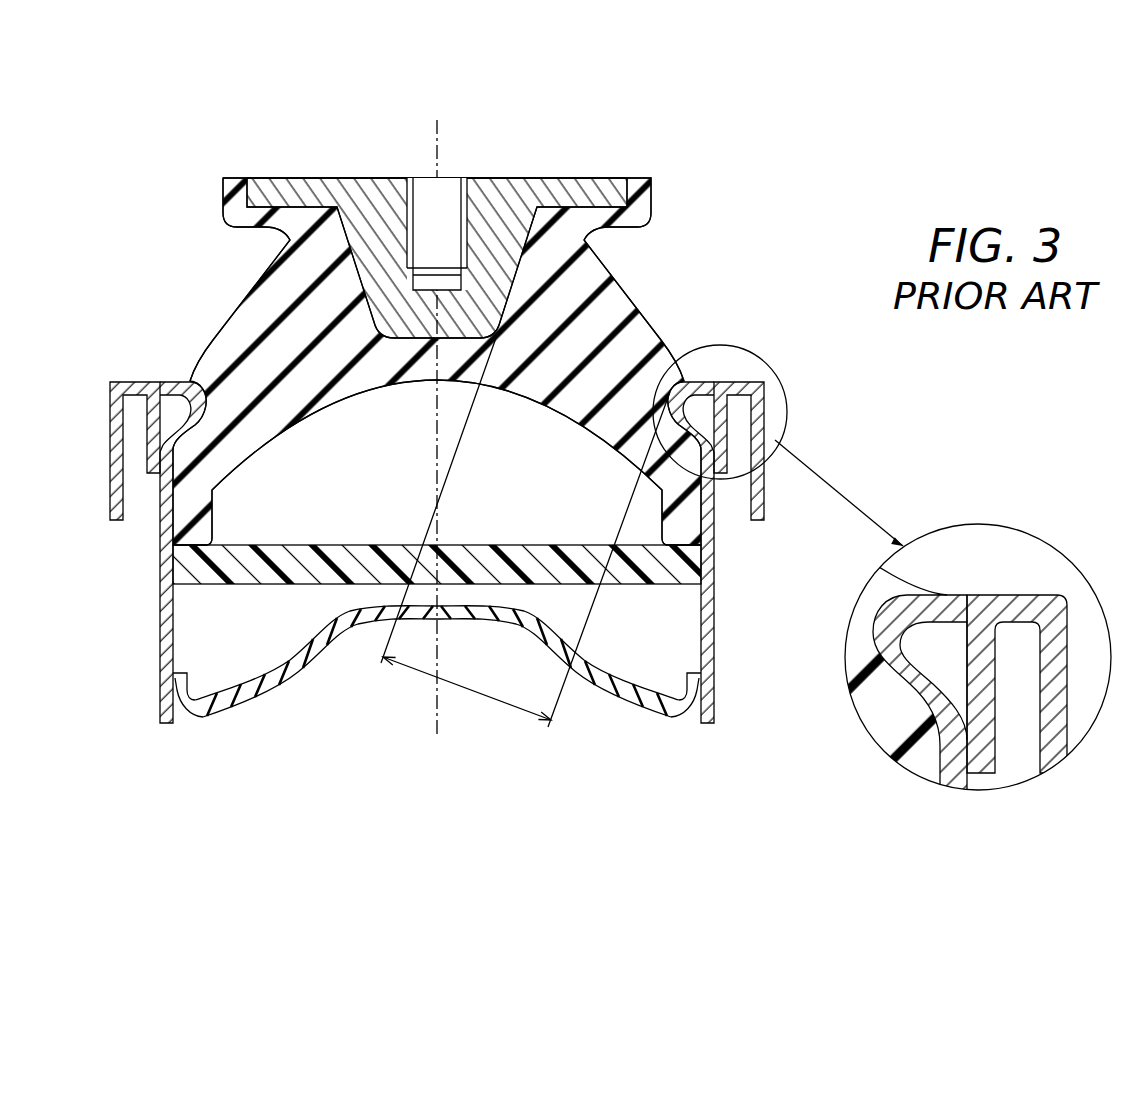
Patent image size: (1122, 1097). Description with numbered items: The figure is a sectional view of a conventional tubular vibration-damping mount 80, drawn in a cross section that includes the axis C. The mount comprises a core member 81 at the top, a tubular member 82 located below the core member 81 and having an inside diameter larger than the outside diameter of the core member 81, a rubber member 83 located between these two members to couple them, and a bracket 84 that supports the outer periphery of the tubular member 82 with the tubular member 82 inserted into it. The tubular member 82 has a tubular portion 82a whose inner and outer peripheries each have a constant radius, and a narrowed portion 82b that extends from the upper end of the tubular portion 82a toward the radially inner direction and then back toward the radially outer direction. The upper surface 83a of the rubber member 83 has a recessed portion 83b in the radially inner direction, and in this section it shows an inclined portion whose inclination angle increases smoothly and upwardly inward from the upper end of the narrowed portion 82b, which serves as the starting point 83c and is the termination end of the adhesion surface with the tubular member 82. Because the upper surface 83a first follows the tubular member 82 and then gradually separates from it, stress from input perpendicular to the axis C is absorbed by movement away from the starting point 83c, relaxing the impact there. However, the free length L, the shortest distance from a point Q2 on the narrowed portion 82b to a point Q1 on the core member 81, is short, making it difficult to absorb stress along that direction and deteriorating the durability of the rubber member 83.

The tubular vibration-damping mount 80 is at (683, 172).
The core member 81 is at (507, 200).
The tubular member 82 is at (160, 563).
The tubular portion 82a is at (714, 541).
The narrowed portion 82b is at (692, 381).
The rubber member 83 is at (260, 357).
The upper surface 83a is at (627, 313).
The recessed portion 83b is at (588, 235).
The starting point 83c is at (947, 594).
The bracket 84 is at (118, 381).
The axis C is at (437, 158).
The point on the core member Q1 is at (497, 335).
The point on the narrowed portion Q2 is at (613, 447).
The free length L is at (525, 531).